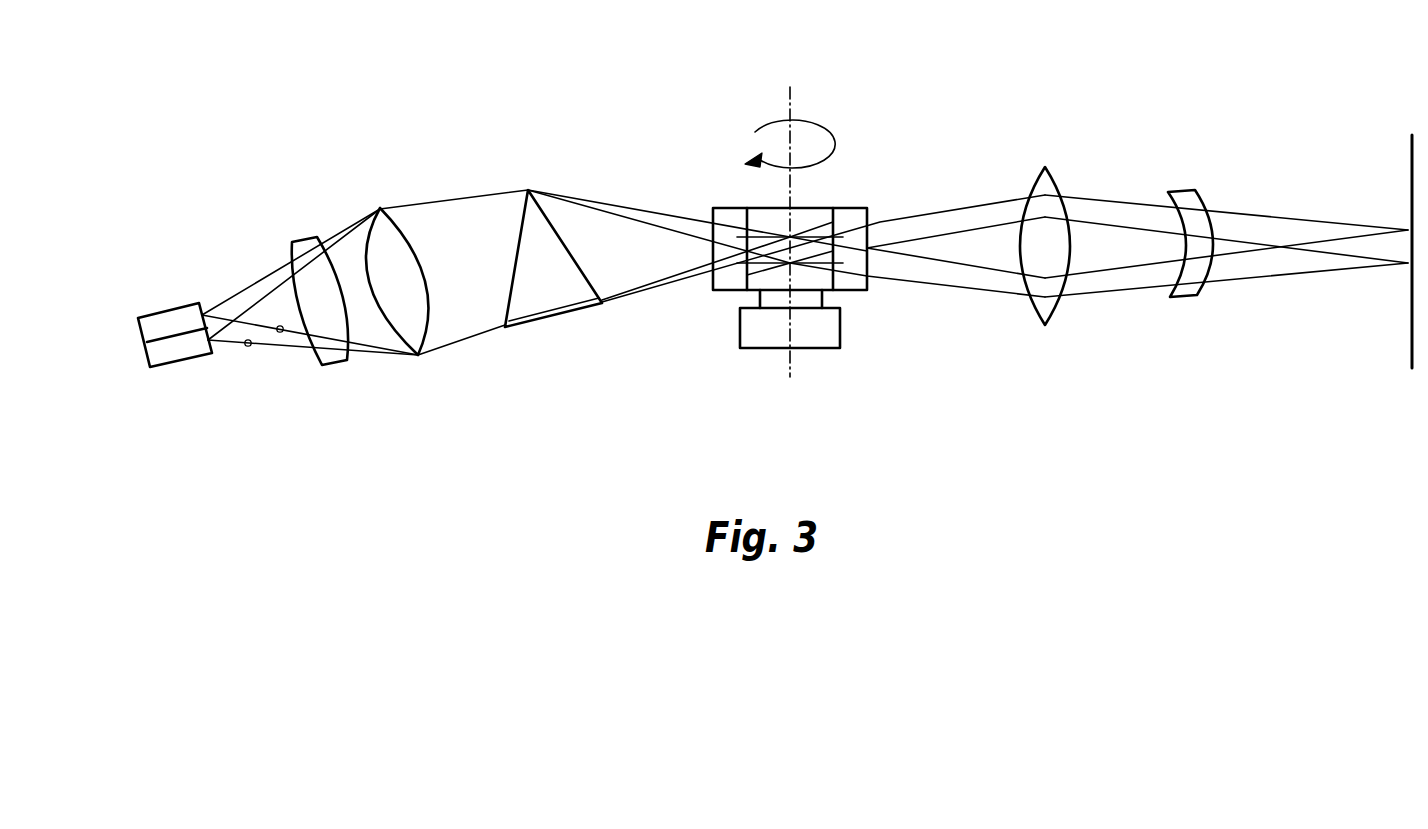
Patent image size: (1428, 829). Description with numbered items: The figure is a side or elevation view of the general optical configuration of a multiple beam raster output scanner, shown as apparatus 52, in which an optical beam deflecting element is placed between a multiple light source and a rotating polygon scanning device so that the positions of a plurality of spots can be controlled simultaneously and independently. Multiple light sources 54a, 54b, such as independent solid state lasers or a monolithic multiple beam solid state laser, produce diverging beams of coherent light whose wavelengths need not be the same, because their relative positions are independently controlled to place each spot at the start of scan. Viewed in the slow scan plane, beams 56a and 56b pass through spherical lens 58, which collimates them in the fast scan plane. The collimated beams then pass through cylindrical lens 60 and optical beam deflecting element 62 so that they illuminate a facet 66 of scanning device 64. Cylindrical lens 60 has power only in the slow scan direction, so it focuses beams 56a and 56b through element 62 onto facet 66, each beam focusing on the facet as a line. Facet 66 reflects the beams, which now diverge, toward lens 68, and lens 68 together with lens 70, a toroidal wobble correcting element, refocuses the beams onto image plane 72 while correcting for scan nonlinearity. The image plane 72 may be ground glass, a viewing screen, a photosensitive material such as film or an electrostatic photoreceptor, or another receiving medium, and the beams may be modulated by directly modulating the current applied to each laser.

The apparatus 52 is at (1120, 54).
The light source 54a is at (153, 325).
The light source 54b is at (165, 353).
The beam 56a is at (280, 334).
The beam 56b is at (248, 348).
The spherical lens 58 is at (303, 240).
The cylindrical lens 60 is at (380, 208).
The optical beam deflecting element 62 is at (528, 190).
The scanning device 64 is at (727, 293).
The facet 66 is at (820, 220).
The lens 68 is at (1045, 305).
The lens 70 is at (1190, 290).
The image plane 72 is at (1410, 313).